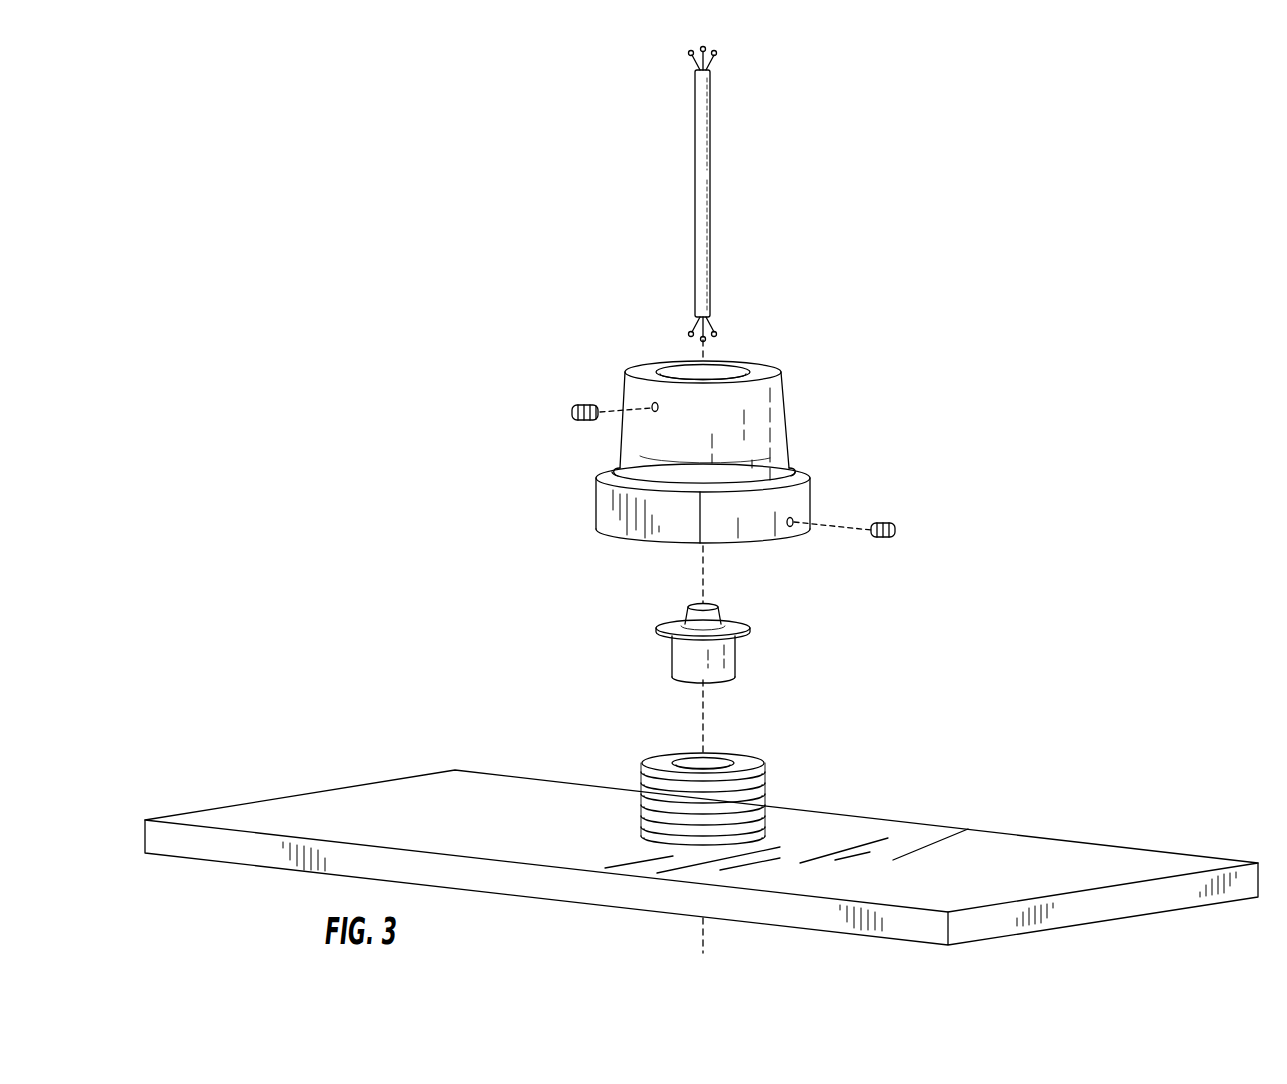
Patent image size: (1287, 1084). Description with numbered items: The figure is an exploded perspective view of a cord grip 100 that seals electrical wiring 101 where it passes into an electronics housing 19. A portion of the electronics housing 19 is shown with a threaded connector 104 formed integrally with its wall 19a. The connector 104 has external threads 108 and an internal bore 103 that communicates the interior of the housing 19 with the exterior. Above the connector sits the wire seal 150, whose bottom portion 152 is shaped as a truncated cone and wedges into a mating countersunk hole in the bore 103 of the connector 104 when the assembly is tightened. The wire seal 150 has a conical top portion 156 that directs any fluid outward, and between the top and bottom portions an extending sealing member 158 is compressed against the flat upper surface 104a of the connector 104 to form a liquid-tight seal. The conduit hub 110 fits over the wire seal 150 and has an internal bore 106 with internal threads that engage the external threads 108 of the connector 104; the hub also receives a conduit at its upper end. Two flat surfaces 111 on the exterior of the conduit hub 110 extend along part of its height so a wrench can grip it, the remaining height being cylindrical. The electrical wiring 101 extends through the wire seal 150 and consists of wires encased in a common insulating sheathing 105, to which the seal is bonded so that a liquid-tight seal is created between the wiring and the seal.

The cord grip 100 is at (887, 269).
The electrical wiring 101 is at (726, 196).
The sheathing 105 is at (701, 272).
The internal bore 106 is at (731, 370).
The conduit hub 110 is at (792, 382).
The flat surfaces 111 is at (626, 518).
The wire seal 150 is at (741, 662).
The bottom portion 152 is at (664, 664).
The top portion 156 is at (728, 613).
The sealing member 158 is at (753, 627).
The internal bore 103 is at (714, 761).
The threaded connector 104 is at (781, 777).
The flat upper surface 104a is at (751, 762).
The external threads 108 is at (639, 778).
The electronics housing 19 is at (1074, 835).
The wall 19a is at (934, 866).